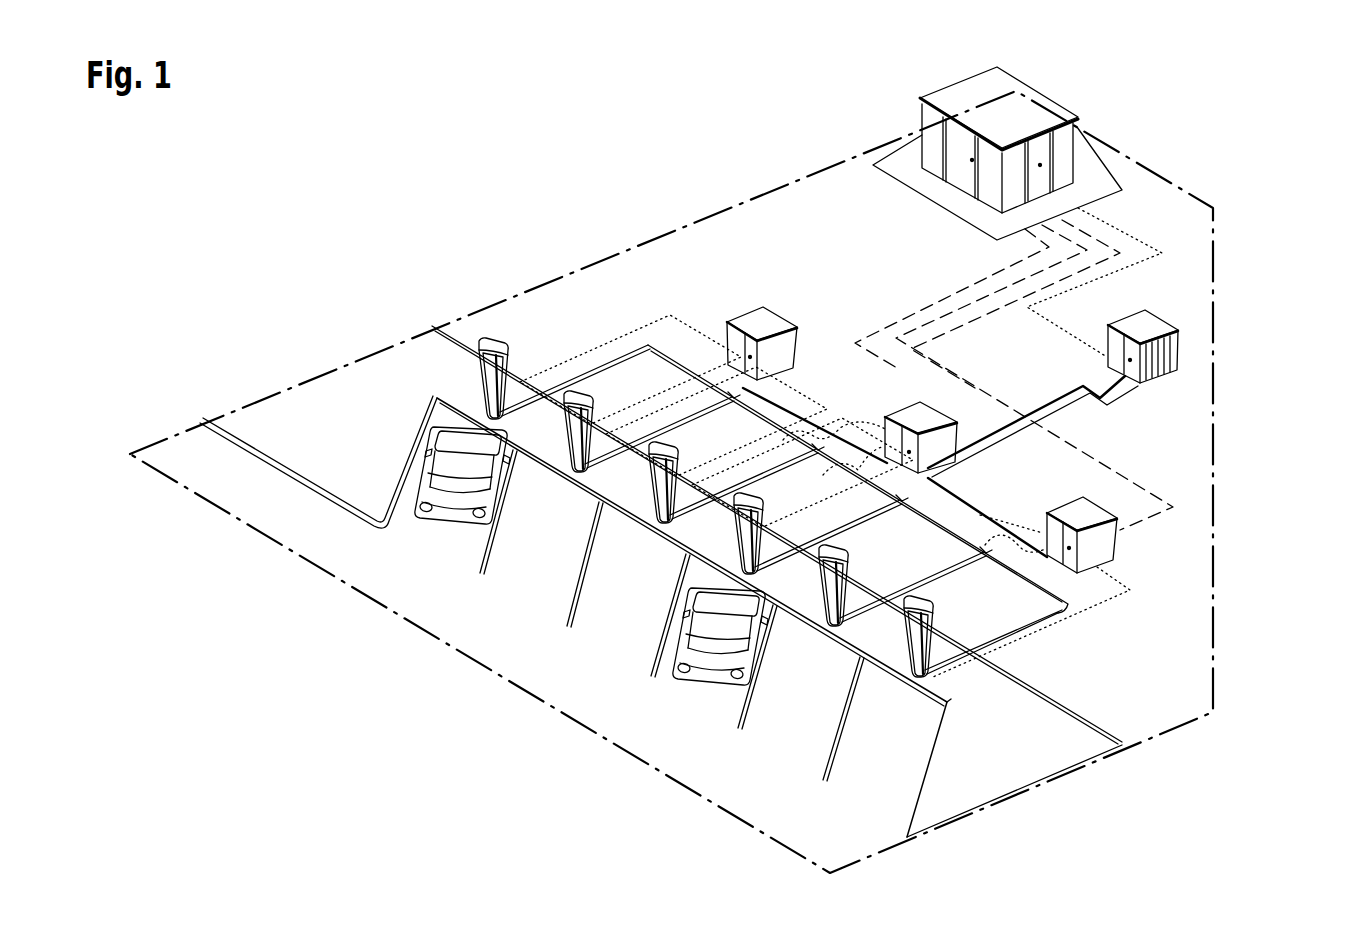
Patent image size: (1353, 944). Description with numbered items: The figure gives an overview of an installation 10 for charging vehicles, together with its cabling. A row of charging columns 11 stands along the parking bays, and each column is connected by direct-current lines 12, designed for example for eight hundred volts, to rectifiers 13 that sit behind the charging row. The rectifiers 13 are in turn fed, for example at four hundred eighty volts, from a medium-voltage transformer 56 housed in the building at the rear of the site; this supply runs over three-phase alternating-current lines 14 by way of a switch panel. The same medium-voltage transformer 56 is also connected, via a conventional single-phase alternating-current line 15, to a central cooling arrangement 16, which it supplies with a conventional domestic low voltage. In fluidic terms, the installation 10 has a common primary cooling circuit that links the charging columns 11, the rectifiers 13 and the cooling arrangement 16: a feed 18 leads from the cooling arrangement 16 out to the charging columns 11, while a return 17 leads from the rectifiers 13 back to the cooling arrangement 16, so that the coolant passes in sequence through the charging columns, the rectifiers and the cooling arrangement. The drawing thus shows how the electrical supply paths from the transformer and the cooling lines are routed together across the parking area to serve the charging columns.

The installation 10 is at (292, 250).
The charging columns 11 is at (940, 655).
The direct-current lines 12 is at (562, 360).
The rectifiers 13 is at (738, 312).
The three-phase alternating-current lines 14 is at (902, 310).
The single-phase alternating-current line 15 is at (1113, 223).
The central cooling arrangement 16 is at (1180, 346).
The return 17 is at (1083, 415).
The feed 18 is at (1115, 417).
The medium-voltage transformer 56 is at (1013, 110).